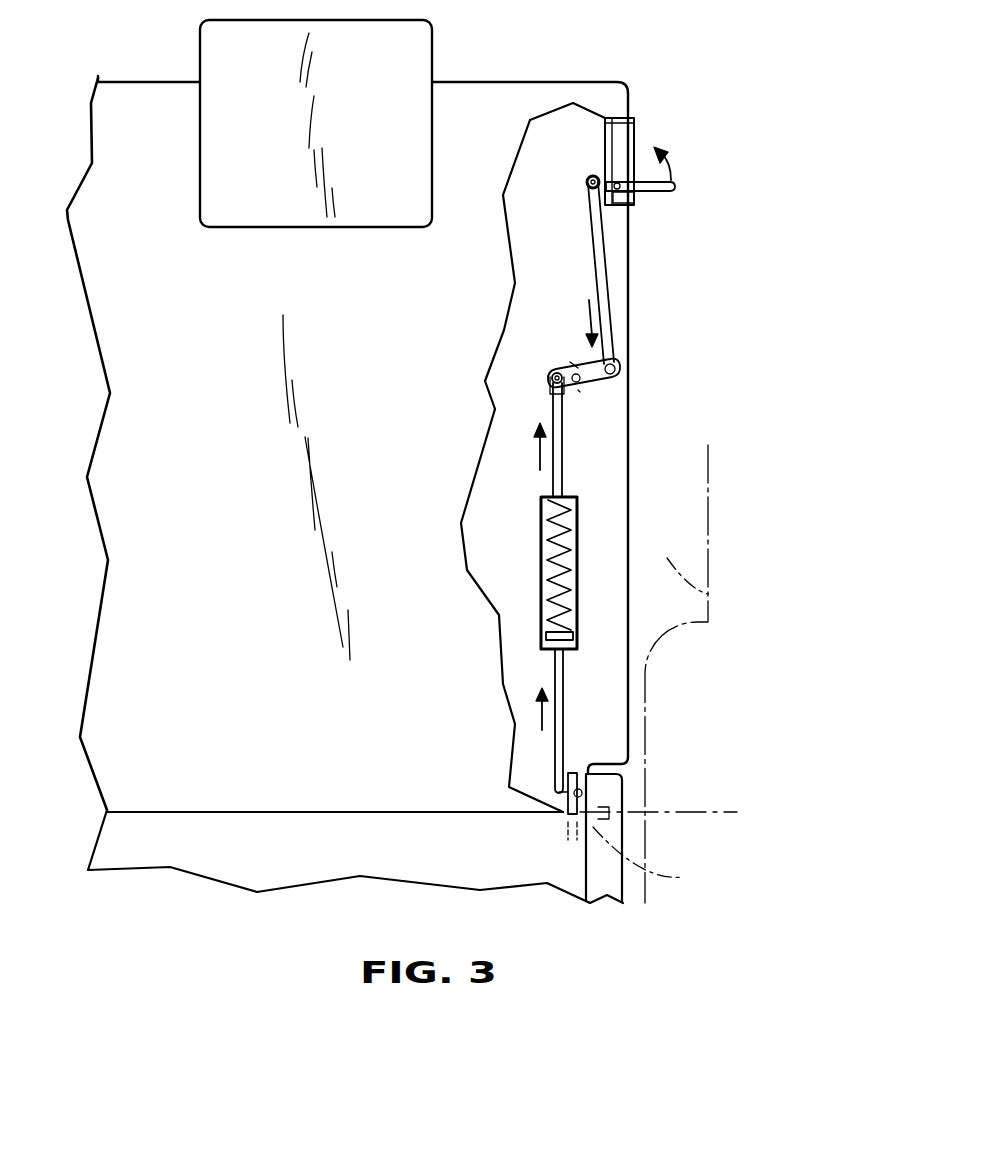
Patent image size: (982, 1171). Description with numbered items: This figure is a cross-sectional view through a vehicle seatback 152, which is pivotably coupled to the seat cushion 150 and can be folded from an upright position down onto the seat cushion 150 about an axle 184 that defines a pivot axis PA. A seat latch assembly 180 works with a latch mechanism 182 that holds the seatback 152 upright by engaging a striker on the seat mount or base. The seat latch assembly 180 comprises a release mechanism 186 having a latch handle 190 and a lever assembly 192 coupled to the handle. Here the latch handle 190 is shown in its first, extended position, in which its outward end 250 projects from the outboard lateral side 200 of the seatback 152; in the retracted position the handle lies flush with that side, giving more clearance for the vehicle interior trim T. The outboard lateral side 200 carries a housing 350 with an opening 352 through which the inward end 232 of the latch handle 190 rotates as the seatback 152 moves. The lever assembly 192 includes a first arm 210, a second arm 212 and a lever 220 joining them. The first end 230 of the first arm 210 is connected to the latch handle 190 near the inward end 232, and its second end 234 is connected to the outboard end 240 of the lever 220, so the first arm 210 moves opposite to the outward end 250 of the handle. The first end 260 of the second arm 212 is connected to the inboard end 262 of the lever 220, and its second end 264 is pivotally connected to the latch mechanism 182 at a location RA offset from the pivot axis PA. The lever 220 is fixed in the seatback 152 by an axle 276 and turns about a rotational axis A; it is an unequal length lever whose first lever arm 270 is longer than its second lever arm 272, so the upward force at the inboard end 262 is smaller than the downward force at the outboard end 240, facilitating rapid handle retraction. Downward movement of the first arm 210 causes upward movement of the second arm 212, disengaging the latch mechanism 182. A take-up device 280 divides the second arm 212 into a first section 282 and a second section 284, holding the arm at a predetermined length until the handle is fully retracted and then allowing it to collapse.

The seat cushion 150 is at (225, 842).
The seatback 152 is at (142, 340).
The seat latch assembly 180 is at (496, 536).
The latch mechanism 182 is at (538, 816).
The axle 184 is at (667, 859).
The release mechanism 186 is at (628, 493).
The latch handle 190 is at (672, 198).
The lever assembly 192 is at (508, 373).
The outboard lateral side 200 is at (630, 290).
The first arm 210 is at (605, 262).
The second arm 212 is at (560, 458).
The lever 220 is at (608, 391).
The first end 230 is at (590, 197).
The inward end 232 is at (587, 178).
The second end 234 is at (612, 362).
The outboard end 240 is at (621, 370).
The outward end 250 is at (675, 187).
The first end 260 is at (548, 397).
The inboard end 262 is at (552, 371).
The second end 264 is at (568, 793).
The first lever arm 270 is at (588, 358).
The second lever arm 272 is at (563, 372).
The axle 276 is at (583, 368).
The take-up device 280 is at (522, 596).
The first section 282 is at (553, 478).
The second section 284 is at (566, 683).
The housing 350 is at (630, 132).
The opening 352 is at (620, 205).
The rotational axis A is at (578, 390).
The interior trim T is at (680, 555).
The location RA is at (582, 792).
The pivot axis PA is at (697, 812).